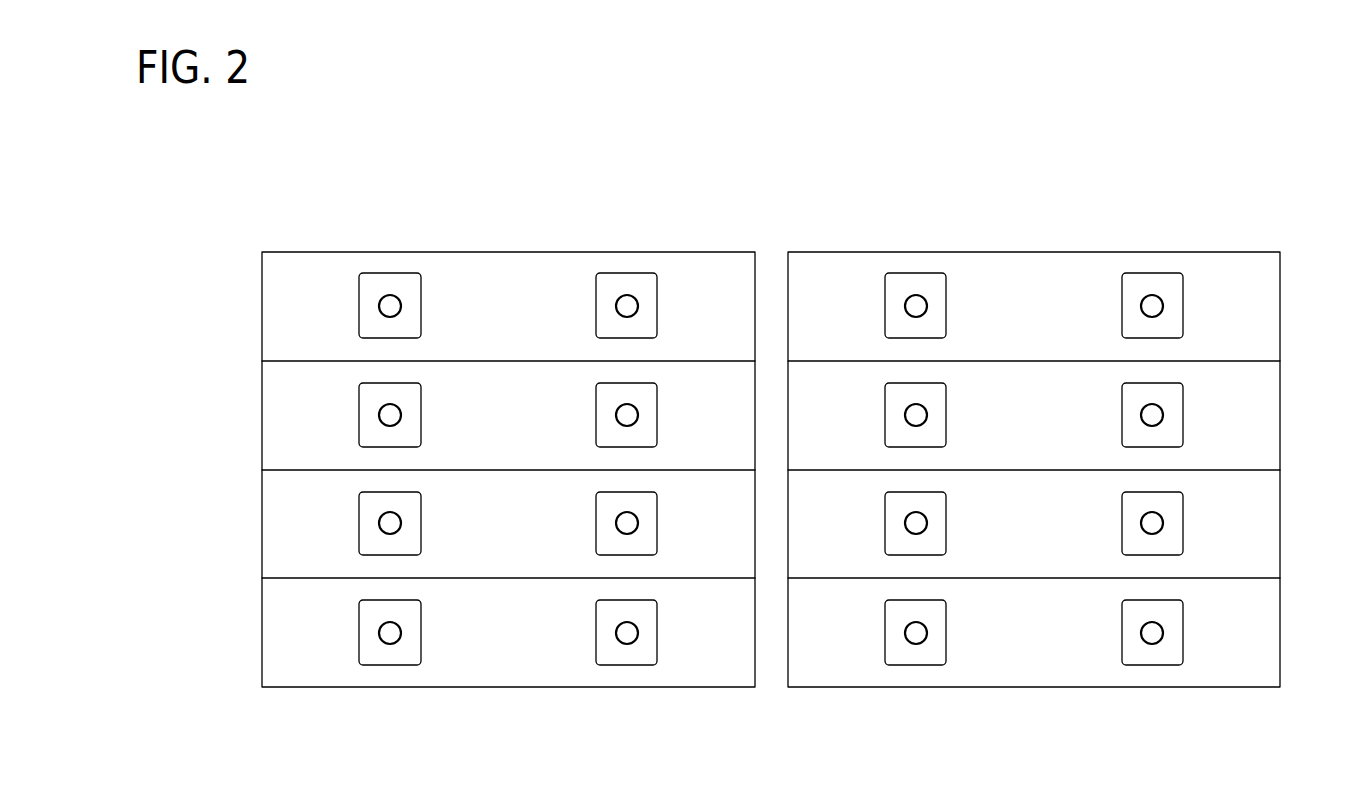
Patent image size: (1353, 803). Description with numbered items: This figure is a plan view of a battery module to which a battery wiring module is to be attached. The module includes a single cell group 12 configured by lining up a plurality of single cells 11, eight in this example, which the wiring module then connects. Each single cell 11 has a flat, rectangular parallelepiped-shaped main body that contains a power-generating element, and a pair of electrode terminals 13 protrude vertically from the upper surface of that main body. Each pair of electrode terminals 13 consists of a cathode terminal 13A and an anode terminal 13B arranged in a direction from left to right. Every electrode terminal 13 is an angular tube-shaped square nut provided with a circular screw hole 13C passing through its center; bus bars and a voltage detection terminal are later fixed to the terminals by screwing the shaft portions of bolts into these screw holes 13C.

The single cell 11 is at (262, 617).
The single cell group 12 is at (771, 163).
The electrode terminal 13 is at (812, 462).
The cathode terminal 13A is at (421, 409).
The anode terminal 13B is at (387, 274).
The screw hole 13C is at (1141, 302).